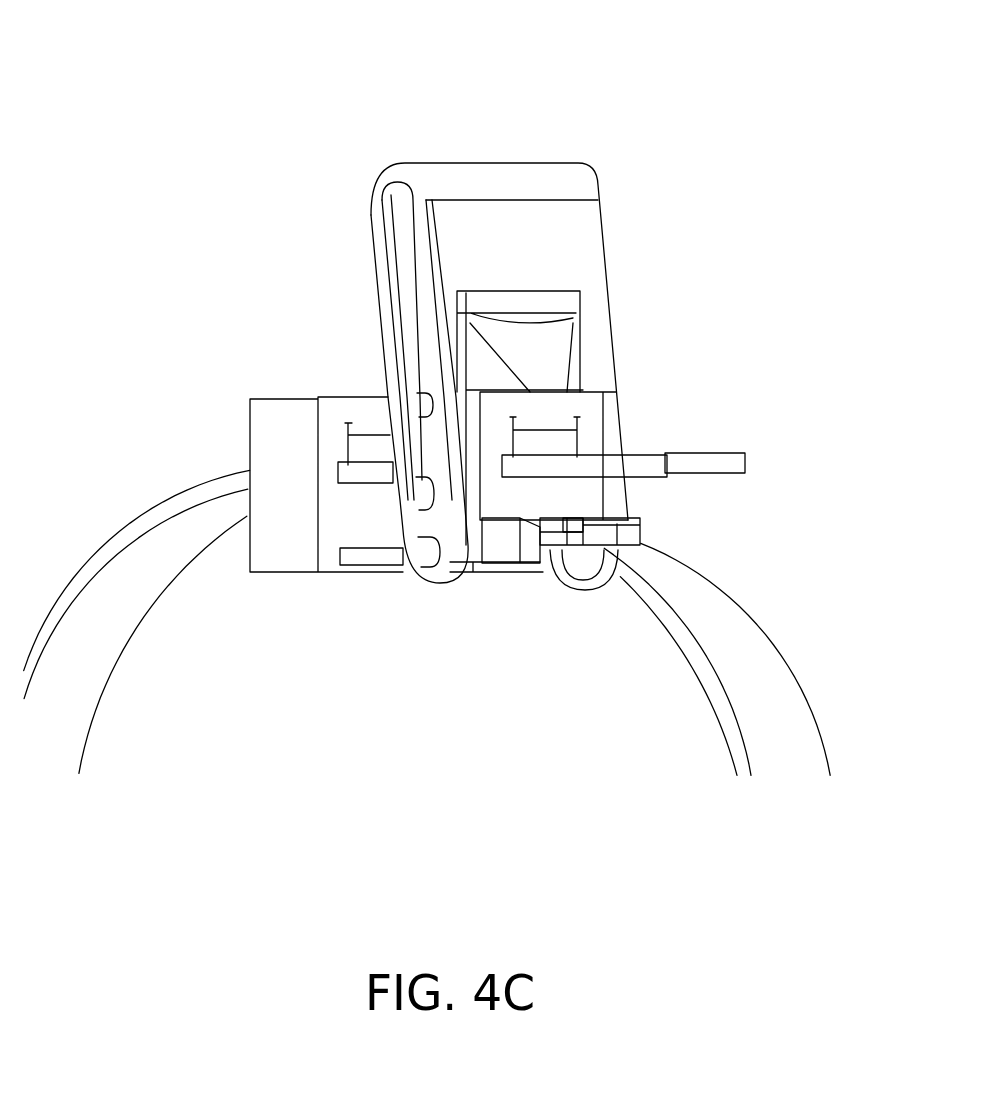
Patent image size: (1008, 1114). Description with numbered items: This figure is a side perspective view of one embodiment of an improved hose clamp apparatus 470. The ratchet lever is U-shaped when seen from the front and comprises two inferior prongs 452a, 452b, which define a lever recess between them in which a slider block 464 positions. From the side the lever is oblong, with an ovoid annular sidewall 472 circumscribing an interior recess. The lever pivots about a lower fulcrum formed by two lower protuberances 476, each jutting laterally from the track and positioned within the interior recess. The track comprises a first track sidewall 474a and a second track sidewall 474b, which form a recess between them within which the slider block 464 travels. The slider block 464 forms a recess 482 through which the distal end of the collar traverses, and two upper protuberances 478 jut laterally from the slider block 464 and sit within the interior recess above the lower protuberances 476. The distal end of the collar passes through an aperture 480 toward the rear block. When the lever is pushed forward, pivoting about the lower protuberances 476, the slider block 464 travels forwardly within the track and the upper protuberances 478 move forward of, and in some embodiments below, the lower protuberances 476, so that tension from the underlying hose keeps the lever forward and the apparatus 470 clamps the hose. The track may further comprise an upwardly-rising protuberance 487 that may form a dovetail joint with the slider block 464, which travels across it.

The apparatus 470 is at (57, 42).
The ovoid annular sidewall 472 is at (393, 385).
The inferior prong 452a is at (450, 347).
The inferior prong 452b is at (600, 357).
The slider block 464 is at (585, 400).
The recess 482 is at (527, 442).
The upwardly-rising protuberance 487 is at (577, 532).
The aperture 480 is at (353, 441).
The upper protuberance 478 is at (420, 493).
The lower protuberance 476 is at (430, 553).
The first track sidewall 474a is at (527, 543).
The second track sidewall 474b is at (613, 540).